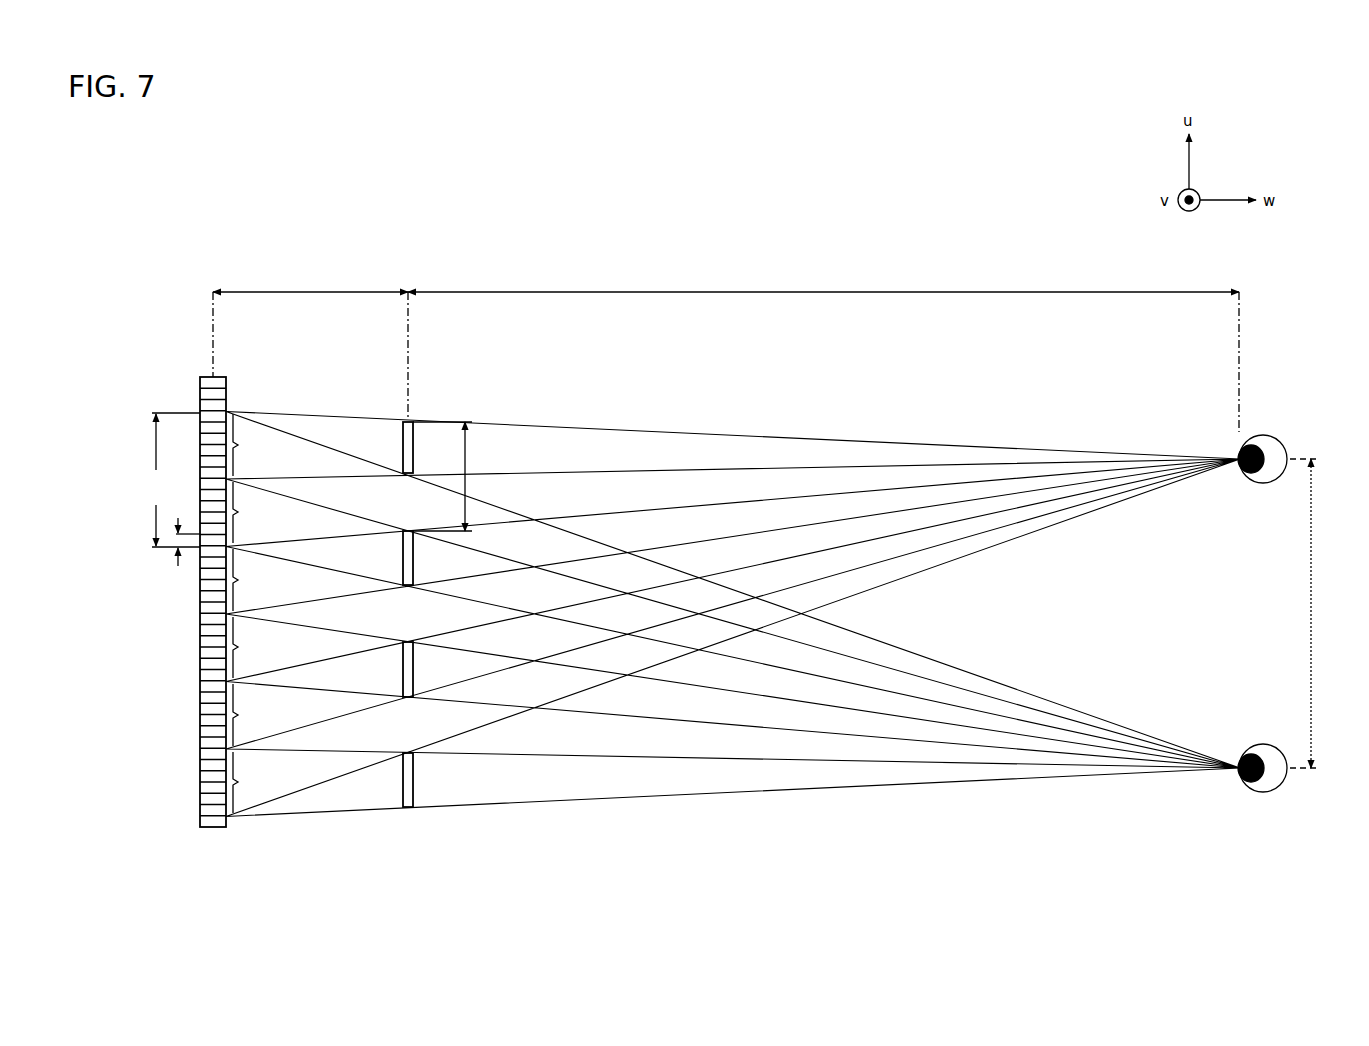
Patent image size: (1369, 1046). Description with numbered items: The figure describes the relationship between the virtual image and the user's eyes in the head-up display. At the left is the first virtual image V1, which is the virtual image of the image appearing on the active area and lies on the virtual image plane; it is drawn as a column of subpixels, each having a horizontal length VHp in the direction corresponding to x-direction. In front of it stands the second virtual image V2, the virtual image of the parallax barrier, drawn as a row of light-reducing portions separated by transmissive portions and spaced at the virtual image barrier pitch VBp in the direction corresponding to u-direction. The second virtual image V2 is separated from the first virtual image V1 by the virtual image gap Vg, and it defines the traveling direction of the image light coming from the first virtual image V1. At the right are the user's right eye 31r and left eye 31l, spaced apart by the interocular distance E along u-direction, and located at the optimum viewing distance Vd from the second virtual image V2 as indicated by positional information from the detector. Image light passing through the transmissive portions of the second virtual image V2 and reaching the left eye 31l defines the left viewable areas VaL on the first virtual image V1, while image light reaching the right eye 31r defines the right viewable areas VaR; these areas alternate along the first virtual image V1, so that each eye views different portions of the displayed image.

The first virtual image V1 is at (224, 374).
The second virtual image V2 is at (413, 418).
The right eye 31r is at (1271, 436).
The left eye 31l is at (1268, 792).
The left viewable areas VaL is at (254, 580).
The right viewable areas VaR is at (255, 647).
The horizontal length of each subpixel of the virtual image VHp is at (143, 504).
The virtual image barrier pitch VBp is at (458, 476).
The virtual image gap Vg is at (310, 279).
The optimum viewing distance Vd is at (823, 349).
The interocular distance E is at (1311, 613).